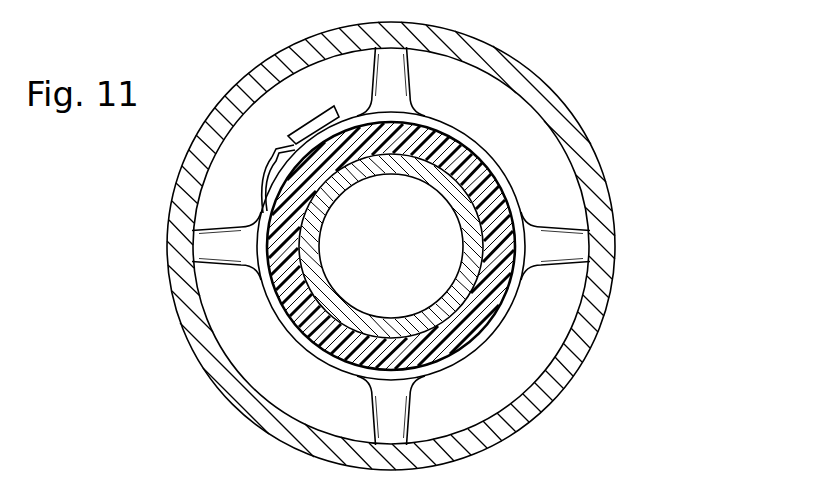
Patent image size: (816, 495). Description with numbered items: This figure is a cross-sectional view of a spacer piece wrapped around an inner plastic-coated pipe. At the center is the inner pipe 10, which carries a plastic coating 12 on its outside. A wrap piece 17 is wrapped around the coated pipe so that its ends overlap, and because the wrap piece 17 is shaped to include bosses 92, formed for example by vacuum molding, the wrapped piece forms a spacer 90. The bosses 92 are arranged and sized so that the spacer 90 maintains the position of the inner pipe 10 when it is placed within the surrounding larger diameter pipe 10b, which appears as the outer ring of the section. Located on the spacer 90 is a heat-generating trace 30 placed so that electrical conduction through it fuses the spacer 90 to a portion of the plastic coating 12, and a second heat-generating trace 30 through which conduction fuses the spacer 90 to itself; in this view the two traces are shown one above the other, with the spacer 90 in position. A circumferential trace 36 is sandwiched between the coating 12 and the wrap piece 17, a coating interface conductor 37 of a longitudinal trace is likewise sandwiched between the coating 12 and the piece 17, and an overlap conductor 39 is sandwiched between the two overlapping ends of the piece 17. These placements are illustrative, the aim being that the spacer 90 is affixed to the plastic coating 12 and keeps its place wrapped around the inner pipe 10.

The pipe 10 is at (313, 343).
The larger diameter pipe 10b is at (548, 112).
The plastic coating 12 is at (486, 284).
The wrap piece 17 is at (504, 324).
The heat-generating trace 30 is at (300, 292).
The circumferential trace 36 is at (272, 205).
The coating interface conductor 37 is at (287, 140).
The overlap conductor 39 is at (306, 142).
The spacer 90 is at (522, 197).
The bosses 92 is at (390, 70).